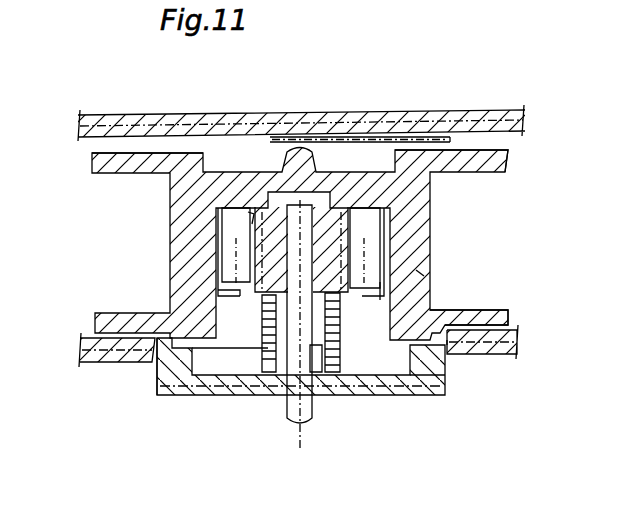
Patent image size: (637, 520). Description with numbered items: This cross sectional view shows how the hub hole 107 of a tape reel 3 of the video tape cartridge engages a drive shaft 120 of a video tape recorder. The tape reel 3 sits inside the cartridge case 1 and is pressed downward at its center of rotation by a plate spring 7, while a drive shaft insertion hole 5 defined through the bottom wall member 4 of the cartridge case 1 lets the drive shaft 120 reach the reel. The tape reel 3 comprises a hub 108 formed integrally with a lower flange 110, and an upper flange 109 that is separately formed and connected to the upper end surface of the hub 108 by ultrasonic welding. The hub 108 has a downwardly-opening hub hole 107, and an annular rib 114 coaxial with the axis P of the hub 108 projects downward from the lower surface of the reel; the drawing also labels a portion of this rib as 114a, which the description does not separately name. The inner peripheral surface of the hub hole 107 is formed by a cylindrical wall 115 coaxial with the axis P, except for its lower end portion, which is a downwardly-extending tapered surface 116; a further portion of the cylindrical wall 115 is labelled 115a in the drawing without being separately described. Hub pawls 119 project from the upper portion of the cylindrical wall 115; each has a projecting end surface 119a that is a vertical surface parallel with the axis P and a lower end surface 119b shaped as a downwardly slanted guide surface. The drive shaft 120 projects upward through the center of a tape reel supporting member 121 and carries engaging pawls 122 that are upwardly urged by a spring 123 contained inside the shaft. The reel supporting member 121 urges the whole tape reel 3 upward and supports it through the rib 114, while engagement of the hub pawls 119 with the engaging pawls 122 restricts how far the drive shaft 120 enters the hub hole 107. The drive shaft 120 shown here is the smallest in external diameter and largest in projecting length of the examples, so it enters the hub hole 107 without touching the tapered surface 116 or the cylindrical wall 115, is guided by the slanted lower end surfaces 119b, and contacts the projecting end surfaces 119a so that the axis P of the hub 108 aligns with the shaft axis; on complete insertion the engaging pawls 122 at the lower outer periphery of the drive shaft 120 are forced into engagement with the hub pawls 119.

The cartridge case 1 is at (234, 113).
The tape reel 3 is at (157, 152).
The bottom wall member 4 is at (498, 350).
The drive shaft insertion hole 5 is at (457, 340).
The plate spring 7 is at (347, 137).
The hub hole 107 is at (376, 280).
The hub 108 is at (420, 268).
The upper flange 109 is at (480, 162).
The lower flange 110 is at (480, 320).
The annular rib 114 is at (157, 345).
The retainer edge 114a is at (158, 355).
The cylindrical wall 115 is at (218, 243).
The cup lip 115a is at (218, 297).
The tapered surface 116 is at (186, 350).
The hub pawl 119 is at (230, 213).
The projecting end surface 119a is at (248, 222).
The lower end surface 119b is at (420, 273).
The drive shaft 120 is at (319, 237).
The tape reel supporting member 121 is at (395, 388).
The engaging pawl 122 is at (219, 287).
The spring 123 is at (328, 342).
The axis P is at (302, 329).